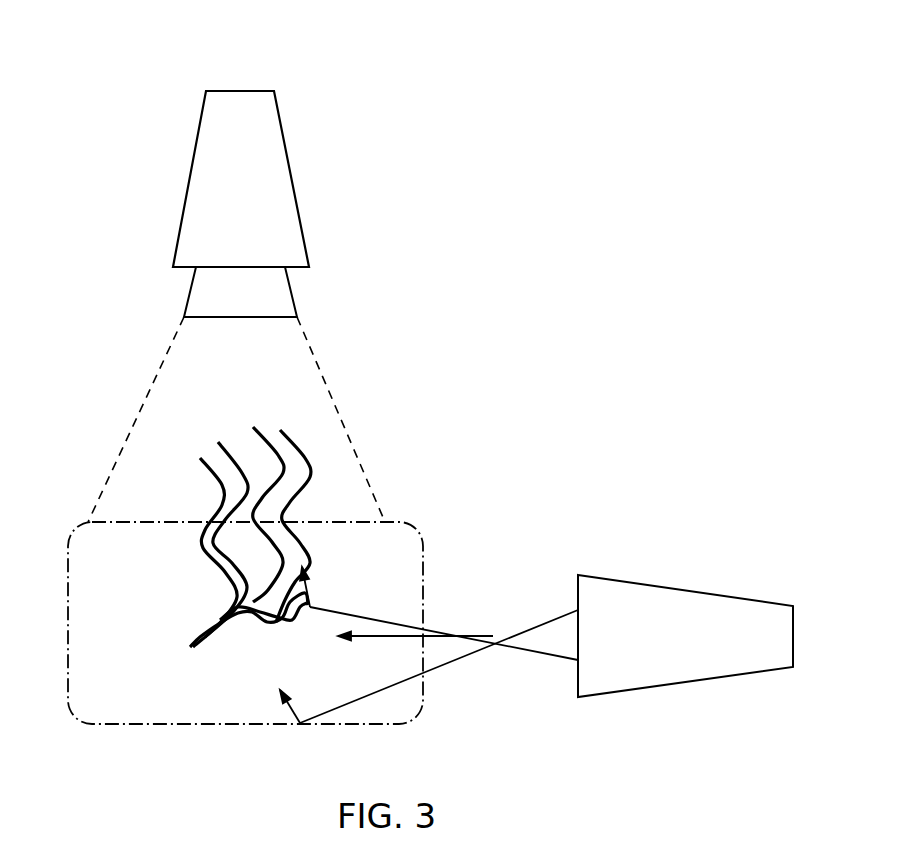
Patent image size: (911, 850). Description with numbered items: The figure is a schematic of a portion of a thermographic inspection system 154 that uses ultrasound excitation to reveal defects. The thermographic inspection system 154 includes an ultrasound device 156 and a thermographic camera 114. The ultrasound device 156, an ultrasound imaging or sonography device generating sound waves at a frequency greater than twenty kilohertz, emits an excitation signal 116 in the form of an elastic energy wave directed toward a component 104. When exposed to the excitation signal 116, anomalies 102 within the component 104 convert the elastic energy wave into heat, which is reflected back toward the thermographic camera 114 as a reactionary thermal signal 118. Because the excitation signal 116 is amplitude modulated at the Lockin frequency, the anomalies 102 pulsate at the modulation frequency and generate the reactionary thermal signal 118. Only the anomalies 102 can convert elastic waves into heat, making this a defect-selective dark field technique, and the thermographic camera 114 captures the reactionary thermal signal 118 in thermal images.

The thermographic inspection system 154 is at (229, 263).
The thermographic camera 114 is at (292, 176).
The reactionary thermal signal 118 is at (212, 488).
The anomalies 102 is at (185, 647).
The component 104 is at (245, 725).
The excitation signal 116 is at (452, 670).
The ultrasound device 156 is at (685, 588).